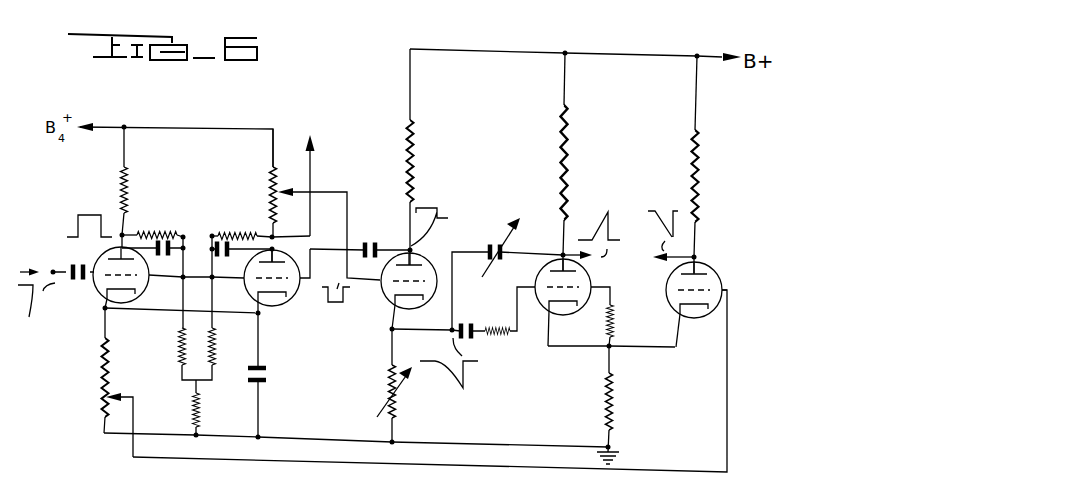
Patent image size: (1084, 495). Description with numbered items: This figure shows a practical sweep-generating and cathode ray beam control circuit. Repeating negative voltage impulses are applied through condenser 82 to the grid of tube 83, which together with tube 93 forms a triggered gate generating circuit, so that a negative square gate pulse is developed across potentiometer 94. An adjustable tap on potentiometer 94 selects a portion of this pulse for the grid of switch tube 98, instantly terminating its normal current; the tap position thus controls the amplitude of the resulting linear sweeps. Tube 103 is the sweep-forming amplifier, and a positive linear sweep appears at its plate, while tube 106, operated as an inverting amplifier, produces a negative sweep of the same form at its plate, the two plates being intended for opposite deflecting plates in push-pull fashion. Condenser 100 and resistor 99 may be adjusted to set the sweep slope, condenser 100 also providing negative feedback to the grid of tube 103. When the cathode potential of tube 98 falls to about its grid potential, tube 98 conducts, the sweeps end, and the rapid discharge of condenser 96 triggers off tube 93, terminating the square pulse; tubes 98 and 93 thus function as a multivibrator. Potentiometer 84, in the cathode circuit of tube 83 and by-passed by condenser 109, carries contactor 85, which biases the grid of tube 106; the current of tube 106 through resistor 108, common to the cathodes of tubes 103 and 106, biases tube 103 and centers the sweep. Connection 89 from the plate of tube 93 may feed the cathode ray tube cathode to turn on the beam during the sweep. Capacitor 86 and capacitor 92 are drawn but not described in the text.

The condenser 82 is at (68, 270).
The tube 83 is at (97, 296).
The potentiometer 84 is at (100, 363).
The adjustable contact 85 is at (119, 399).
The feedback capacitor 86 is at (172, 246).
The connection 89 is at (317, 184).
The capacitor 92 is at (243, 259).
The tube 93 is at (299, 289).
The potentiometer 94 is at (268, 203).
The condenser 96 is at (368, 244).
The switch tube 98 is at (383, 292).
The resistor 99 is at (406, 398).
The condenser 100 is at (492, 243).
The sweep-forming amplifier tube 103 is at (583, 310).
The inverting amplifier tube 106 is at (711, 310).
The resistor 108 is at (611, 428).
The condenser 109 is at (268, 376).